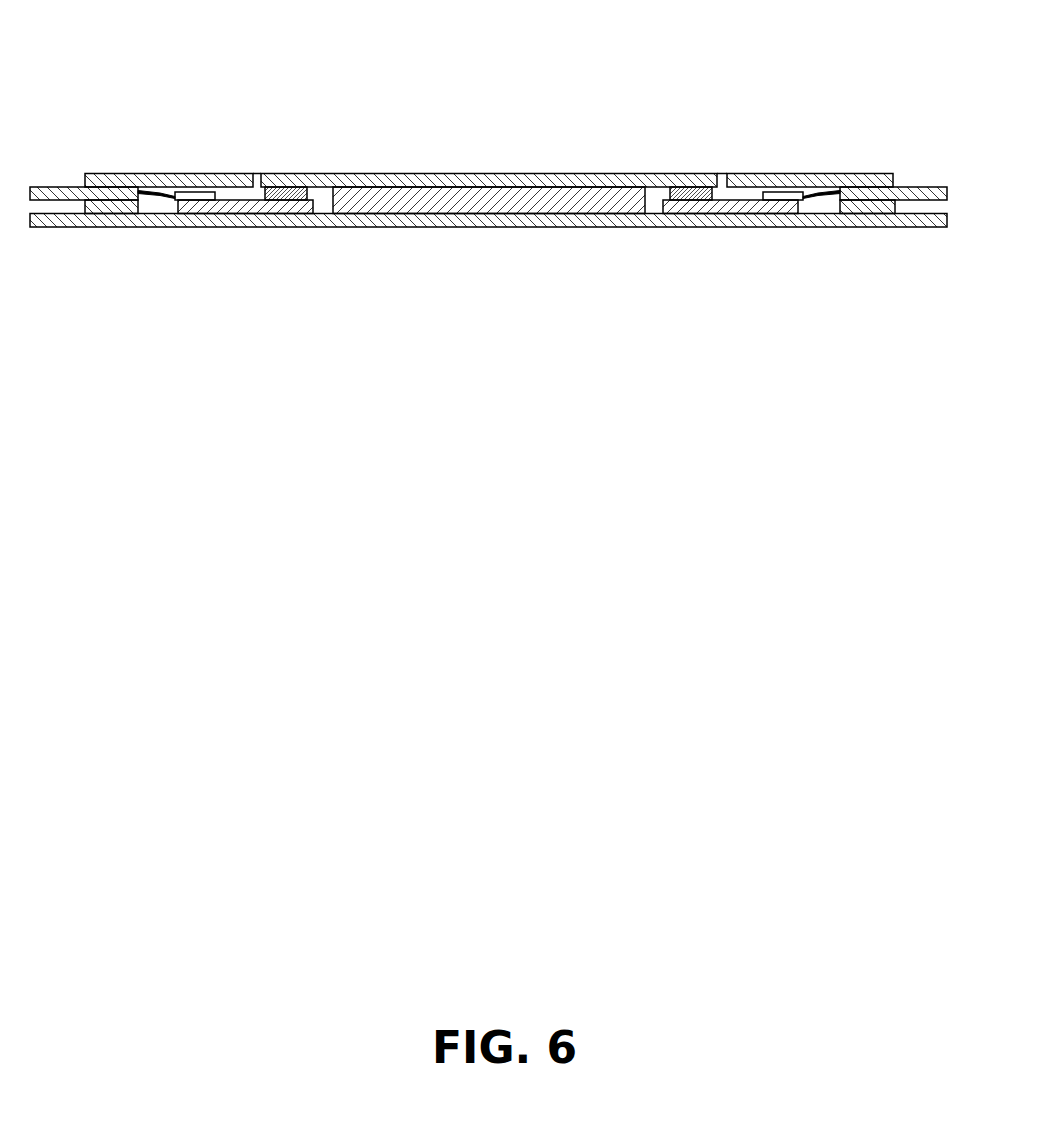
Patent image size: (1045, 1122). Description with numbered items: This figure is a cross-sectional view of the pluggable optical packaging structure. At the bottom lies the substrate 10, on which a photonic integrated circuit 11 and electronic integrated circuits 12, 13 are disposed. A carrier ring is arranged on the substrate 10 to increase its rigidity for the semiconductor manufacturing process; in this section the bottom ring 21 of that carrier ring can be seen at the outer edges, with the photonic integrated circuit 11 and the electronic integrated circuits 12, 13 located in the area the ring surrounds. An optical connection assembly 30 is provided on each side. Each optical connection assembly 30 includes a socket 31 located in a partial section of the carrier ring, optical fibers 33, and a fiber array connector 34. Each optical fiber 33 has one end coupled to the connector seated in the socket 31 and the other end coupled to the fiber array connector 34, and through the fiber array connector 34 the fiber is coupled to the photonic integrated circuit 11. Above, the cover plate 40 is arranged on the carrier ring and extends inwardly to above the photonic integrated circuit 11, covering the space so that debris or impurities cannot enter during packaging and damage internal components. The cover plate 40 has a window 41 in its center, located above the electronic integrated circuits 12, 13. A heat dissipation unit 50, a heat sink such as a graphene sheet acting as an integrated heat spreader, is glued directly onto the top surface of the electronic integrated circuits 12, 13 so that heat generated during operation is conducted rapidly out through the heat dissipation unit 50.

The substrate 10 is at (402, 220).
The photonic integrated circuit 11 is at (250, 205).
The electronic integrated circuit 12 is at (468, 195).
The electronic integrated circuit 13 is at (290, 188).
The bottom ring 21 is at (865, 210).
The optical connection assembly 30 is at (488, 200).
The socket 31 is at (53, 198).
The optical fiber 33 is at (153, 197).
The fiber array connector 34 is at (195, 201).
The cover plate 40 is at (132, 180).
The window 41 is at (257, 178).
The heat dissipation unit 50 is at (565, 185).